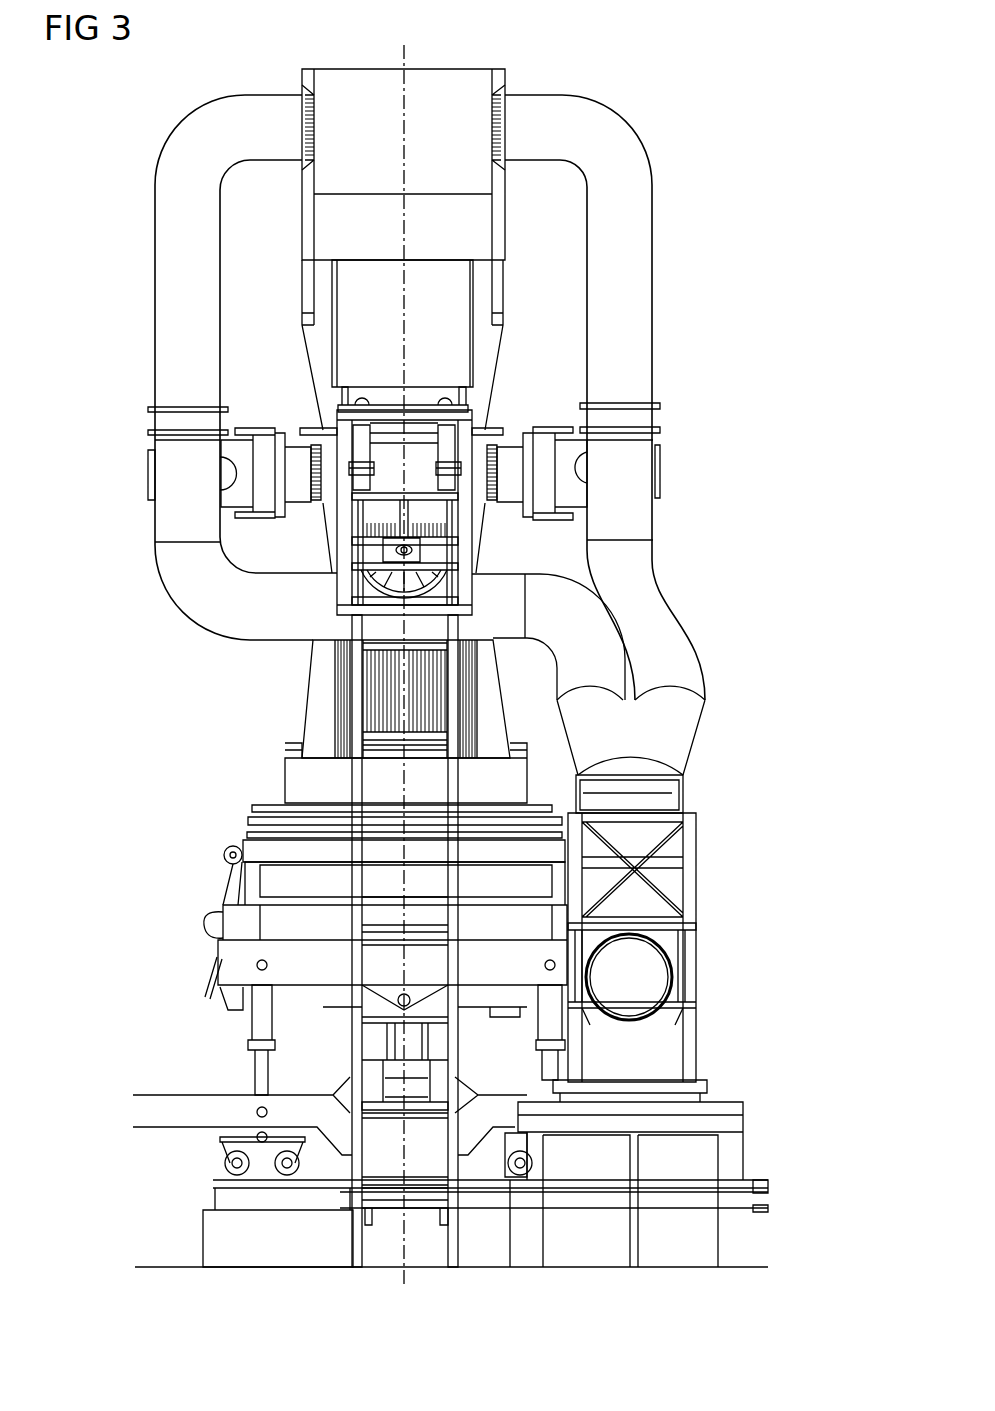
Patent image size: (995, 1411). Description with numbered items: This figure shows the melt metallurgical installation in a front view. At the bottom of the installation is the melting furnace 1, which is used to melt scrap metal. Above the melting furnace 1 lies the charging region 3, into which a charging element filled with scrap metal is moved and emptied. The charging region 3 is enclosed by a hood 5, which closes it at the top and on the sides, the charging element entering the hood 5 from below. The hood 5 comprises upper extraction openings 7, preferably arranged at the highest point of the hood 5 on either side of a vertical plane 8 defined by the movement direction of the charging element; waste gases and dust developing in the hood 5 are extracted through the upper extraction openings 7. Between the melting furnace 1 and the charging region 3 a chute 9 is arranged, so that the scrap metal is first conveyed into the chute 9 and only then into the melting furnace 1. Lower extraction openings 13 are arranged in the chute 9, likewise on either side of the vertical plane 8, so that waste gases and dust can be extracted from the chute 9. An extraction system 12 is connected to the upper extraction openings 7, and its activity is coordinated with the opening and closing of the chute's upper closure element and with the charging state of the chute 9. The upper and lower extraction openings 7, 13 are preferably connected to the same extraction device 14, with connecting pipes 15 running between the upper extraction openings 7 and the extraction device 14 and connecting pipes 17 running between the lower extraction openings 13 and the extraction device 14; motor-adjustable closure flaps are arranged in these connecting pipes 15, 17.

The melting furnace 1 is at (162, 921).
The charging region 3 is at (455, 349).
The hood 5 is at (503, 238).
The upper extraction openings 7 is at (305, 128).
The vertical plane 8 is at (401, 327).
The chute 9 is at (488, 700).
The extraction system 12 is at (375, 397).
The lower extraction openings 13 is at (310, 478).
The extraction device 14 is at (685, 922).
The connecting pipes 15 is at (162, 232).
The connecting pipes 17 is at (298, 455).